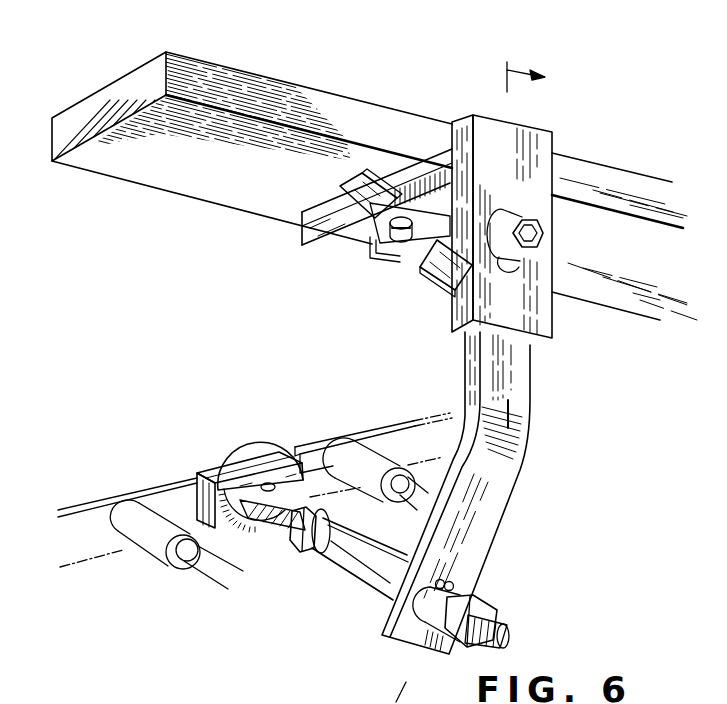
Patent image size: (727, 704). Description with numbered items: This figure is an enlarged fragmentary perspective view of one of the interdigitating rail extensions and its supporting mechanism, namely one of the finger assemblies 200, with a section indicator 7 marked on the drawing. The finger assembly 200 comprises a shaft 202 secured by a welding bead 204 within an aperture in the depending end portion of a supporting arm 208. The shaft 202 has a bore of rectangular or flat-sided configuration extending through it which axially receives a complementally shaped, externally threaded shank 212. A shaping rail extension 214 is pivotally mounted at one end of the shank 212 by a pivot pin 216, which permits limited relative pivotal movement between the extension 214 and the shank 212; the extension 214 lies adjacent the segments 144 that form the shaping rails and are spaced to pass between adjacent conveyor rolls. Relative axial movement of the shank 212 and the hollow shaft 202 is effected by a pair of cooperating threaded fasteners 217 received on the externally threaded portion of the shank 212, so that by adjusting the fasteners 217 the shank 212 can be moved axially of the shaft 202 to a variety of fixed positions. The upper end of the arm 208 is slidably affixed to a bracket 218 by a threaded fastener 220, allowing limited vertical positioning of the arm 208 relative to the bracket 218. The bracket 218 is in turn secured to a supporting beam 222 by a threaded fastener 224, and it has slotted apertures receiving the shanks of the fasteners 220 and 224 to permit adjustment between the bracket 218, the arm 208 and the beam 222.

The supporting beam 222 is at (220, 68).
The bracket 218 is at (540, 138).
The threaded fastener 220 is at (545, 242).
The threaded fastener 224 is at (403, 242).
The section line for FIG. 7 is at (519, 65).
The supporting arm 208 is at (506, 485).
The segments 144 is at (80, 505).
The shaping rail extension 214 is at (222, 468).
The pivot pin 216 is at (268, 483).
The shank 212 is at (287, 522).
The threaded fasteners 217 is at (308, 559).
The shaft 202 is at (358, 574).
The finger assembly 200 is at (345, 649).
The welding bead 204 is at (448, 582).